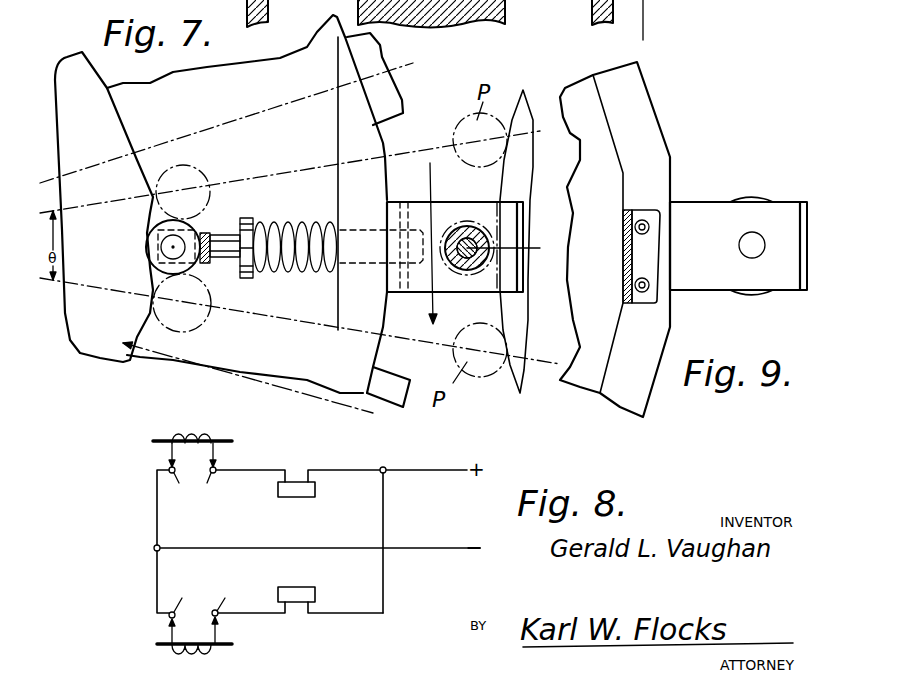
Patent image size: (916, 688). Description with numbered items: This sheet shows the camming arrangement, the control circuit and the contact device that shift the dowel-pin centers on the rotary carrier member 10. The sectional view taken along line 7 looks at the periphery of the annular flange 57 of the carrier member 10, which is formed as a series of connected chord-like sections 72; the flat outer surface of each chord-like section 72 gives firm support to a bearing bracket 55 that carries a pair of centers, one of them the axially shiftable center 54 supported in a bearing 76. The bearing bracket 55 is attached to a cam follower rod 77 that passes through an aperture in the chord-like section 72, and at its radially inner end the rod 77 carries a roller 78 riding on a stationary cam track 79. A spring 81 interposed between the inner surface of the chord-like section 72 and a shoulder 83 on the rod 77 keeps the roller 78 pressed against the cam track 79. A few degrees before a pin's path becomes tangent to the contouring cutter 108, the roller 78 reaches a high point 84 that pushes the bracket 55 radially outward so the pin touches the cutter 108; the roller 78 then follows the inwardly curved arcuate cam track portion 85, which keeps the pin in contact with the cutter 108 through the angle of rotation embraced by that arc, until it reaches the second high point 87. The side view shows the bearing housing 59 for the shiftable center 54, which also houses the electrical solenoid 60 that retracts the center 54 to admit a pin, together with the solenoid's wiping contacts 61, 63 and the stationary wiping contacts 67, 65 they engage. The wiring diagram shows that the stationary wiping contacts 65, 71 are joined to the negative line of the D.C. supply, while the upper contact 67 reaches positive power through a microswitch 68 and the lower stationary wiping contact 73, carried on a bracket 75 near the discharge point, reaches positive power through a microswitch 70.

In FIG. 7, the section line 7 is at (627, 25).
In FIG. 9, the rotary carrier member 10 is at (587, 130).
In FIG. 9, the axially shiftable center 54 is at (753, 247).
In FIG. 7, the bearing bracket 55 is at (417, 305).
In FIG. 7, the annular flange 57 is at (383, 138).
In FIG. 9, the bearing housing 59 is at (780, 213).
In FIG. 9, the electrical solenoid 60 is at (747, 197).
In FIG. 8, the electrical solenoid 60 is at (197, 433).
In FIG. 8, the wiping contact 61 is at (167, 460).
In FIG. 9, the wiping contact 63 is at (667, 247).
In FIG. 8, the wiping contact 63 is at (218, 460).
In FIG. 8, the stationary wiping contact 65 is at (183, 491).
In FIG. 9, the stationary wiping contact 67 is at (663, 297).
In FIG. 8, the stationary wiping contact 67 is at (225, 491).
In FIG. 8, the microswitch 68 is at (277, 500).
In FIG. 8, the microswitch 70 is at (317, 567).
In FIG. 8, the stationary wiping contact 71 is at (186, 605).
In FIG. 7, the chord-like section 72 is at (323, 113).
In FIG. 8, the stationary wiping contact 73 is at (233, 605).
In FIG. 7, the bracket 75 is at (430, 13).
In FIG. 7, the bearing 76 is at (467, 223).
In FIG. 7, the cam follower rod 77 is at (227, 263).
In FIG. 7, the roller 78 is at (177, 267).
In FIG. 7, the cam track 79 is at (248, 343).
In FIG. 7, the spring 81 is at (280, 227).
In FIG. 7, the shoulder 83 is at (248, 220).
In FIG. 7, the high point 84 is at (153, 195).
In FIG. 7, the arcuate cam track portion 85 is at (147, 268).
In FIG. 7, the second high point 87 is at (153, 297).
In FIG. 7, the contouring cutter 108 is at (517, 353).